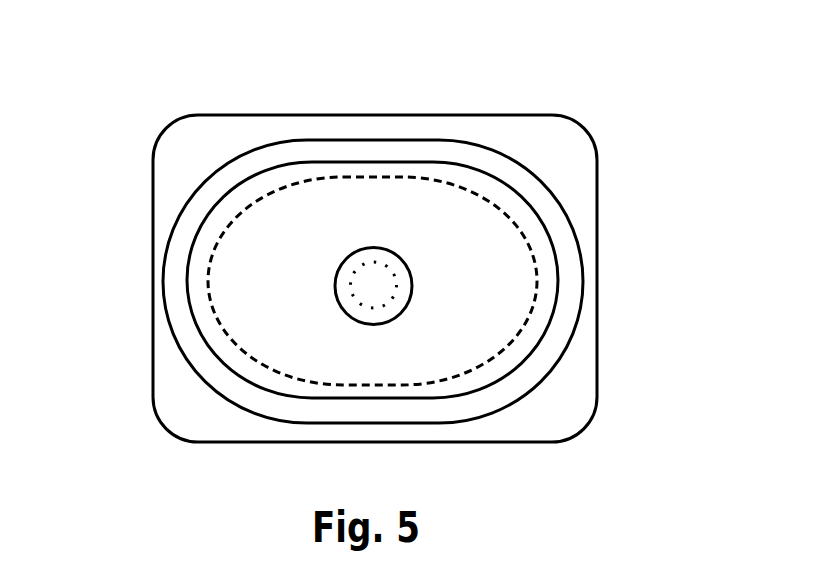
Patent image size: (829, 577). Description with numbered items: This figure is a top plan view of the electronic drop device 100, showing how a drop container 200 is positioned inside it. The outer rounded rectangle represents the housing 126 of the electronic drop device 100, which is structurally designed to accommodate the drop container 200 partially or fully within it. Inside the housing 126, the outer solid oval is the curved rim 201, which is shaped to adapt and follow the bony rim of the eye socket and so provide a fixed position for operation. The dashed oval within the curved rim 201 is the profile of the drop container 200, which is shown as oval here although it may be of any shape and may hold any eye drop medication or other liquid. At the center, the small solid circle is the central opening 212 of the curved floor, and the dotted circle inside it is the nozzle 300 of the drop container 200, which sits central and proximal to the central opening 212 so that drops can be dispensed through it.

The electronic drop device 100 is at (137, 90).
The housing 126 is at (165, 165).
The curved rim 201 is at (503, 158).
The drop container 200 is at (511, 223).
The central opening 212 is at (410, 297).
The nozzle 300 is at (353, 300).